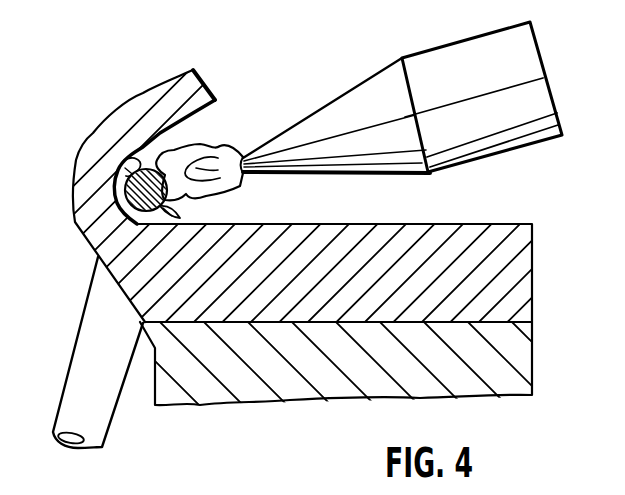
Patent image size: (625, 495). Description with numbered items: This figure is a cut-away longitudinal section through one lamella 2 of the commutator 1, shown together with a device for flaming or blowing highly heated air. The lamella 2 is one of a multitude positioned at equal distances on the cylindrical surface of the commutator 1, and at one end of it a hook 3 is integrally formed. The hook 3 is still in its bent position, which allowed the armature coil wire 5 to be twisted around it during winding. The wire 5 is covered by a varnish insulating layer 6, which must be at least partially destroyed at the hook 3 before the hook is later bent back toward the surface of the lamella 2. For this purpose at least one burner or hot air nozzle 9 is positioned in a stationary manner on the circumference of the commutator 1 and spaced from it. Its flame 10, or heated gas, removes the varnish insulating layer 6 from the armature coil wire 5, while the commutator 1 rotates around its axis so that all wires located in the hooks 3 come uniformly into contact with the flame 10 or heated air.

The commutator 1 is at (312, 236).
The lamella 2 is at (510, 283).
The hook 3 is at (150, 113).
The armature coil wire 5 is at (135, 200).
The varnish insulating layer 6 is at (120, 168).
The burner or hot air nozzle 9 is at (341, 104).
The flame 10 is at (195, 162).